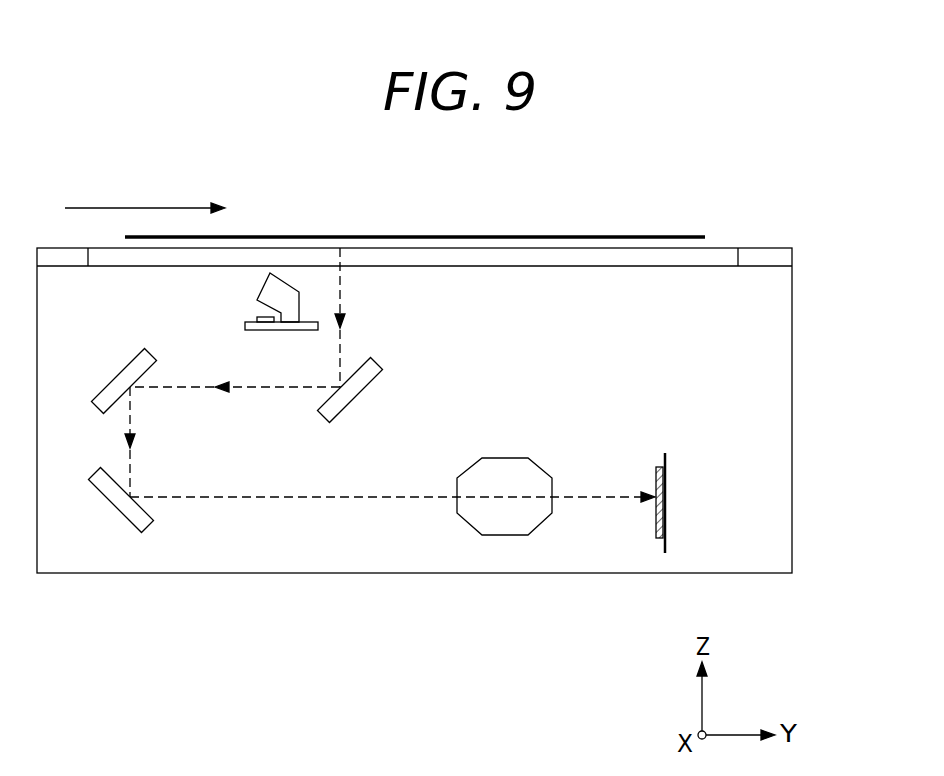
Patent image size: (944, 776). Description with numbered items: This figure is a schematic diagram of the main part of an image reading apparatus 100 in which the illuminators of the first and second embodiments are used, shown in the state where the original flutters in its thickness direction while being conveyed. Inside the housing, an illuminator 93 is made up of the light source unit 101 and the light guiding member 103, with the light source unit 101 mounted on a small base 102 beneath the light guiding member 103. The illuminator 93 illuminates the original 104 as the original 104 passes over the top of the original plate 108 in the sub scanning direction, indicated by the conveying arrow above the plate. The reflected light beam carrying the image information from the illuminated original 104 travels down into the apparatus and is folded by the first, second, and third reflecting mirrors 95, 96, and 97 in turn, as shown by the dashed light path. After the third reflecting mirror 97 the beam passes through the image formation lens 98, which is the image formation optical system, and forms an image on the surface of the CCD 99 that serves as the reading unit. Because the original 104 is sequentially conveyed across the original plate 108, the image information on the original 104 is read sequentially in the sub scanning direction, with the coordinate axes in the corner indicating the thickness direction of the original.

The illuminator 93 is at (230, 326).
The first reflecting mirror 95 is at (358, 397).
The second reflecting mirror 96 is at (118, 373).
The third reflecting mirror 97 is at (113, 508).
The image formation lens 98 is at (500, 550).
The CCD 99 is at (675, 506).
The image reading apparatus 100 is at (800, 378).
The light source unit 101 is at (257, 318).
The substrate 102 is at (280, 330).
The light guiding member 103 is at (257, 300).
The original 104 is at (555, 235).
The original plate 108 is at (717, 253).